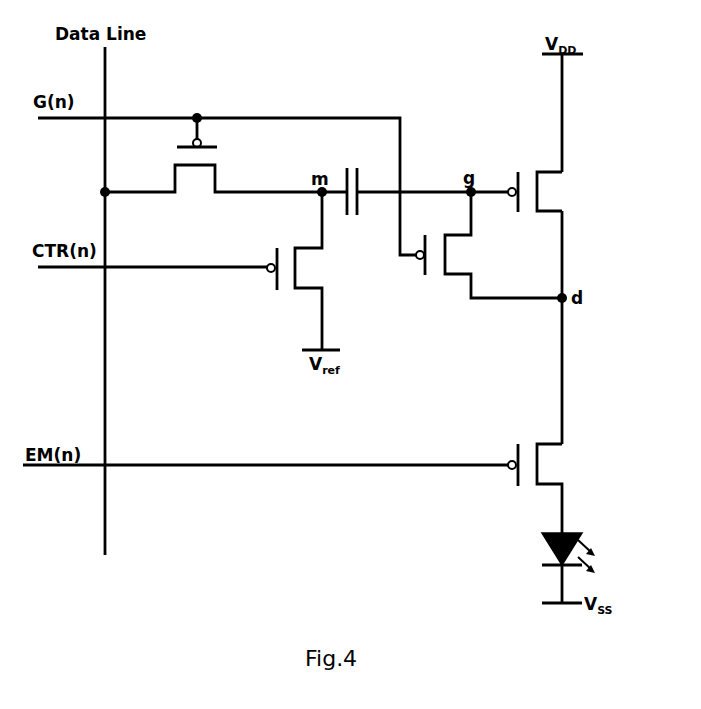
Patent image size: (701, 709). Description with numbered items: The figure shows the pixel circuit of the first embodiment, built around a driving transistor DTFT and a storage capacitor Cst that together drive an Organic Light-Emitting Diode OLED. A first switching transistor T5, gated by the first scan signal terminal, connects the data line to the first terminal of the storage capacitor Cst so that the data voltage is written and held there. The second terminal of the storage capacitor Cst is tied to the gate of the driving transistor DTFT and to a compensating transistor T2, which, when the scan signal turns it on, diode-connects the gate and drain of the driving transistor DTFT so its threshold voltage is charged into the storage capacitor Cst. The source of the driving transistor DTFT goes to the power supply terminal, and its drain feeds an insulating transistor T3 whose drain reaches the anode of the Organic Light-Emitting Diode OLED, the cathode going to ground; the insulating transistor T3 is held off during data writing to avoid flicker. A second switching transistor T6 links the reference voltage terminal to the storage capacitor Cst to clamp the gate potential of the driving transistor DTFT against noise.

The first switching transistor T5 is at (213, 161).
The second switching transistor T6 is at (303, 271).
The compensating transistor T2 is at (489, 245).
The insulating transistor T3 is at (538, 488).
The driving transistor DTFT is at (534, 192).
The storage capacitor Cst is at (396, 191).
The Organic Light-Emitting Diode OLED is at (534, 568).